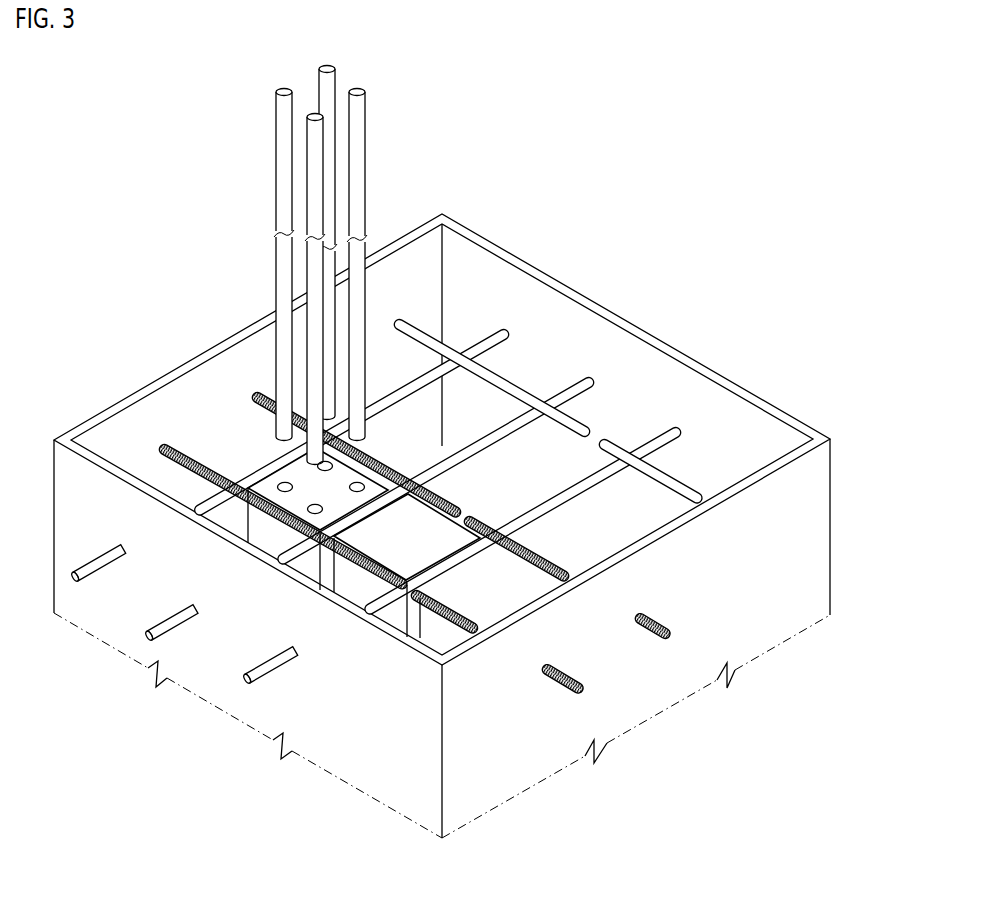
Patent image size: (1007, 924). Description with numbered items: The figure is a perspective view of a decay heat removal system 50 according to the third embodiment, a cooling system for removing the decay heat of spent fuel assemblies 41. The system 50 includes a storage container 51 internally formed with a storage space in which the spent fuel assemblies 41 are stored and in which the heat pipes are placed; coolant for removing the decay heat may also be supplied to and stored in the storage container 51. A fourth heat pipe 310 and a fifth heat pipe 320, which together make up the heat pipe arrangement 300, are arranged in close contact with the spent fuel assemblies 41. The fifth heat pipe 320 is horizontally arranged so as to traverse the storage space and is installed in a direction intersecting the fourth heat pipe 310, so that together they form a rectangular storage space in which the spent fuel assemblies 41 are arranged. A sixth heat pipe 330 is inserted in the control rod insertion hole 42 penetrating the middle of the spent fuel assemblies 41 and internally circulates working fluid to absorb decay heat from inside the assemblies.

The decay heat removal system 50 is at (720, 207).
The storage container 51 is at (628, 318).
The spent fuel assemblies 41 is at (260, 538).
The control rod insertion hole 42 is at (315, 516).
The anchor assembly 300 is at (426, 614).
The fourth heat pipe 310 is at (528, 560).
The fifth heat pipe 320 is at (662, 478).
The sixth heat pipe 330 is at (282, 125).